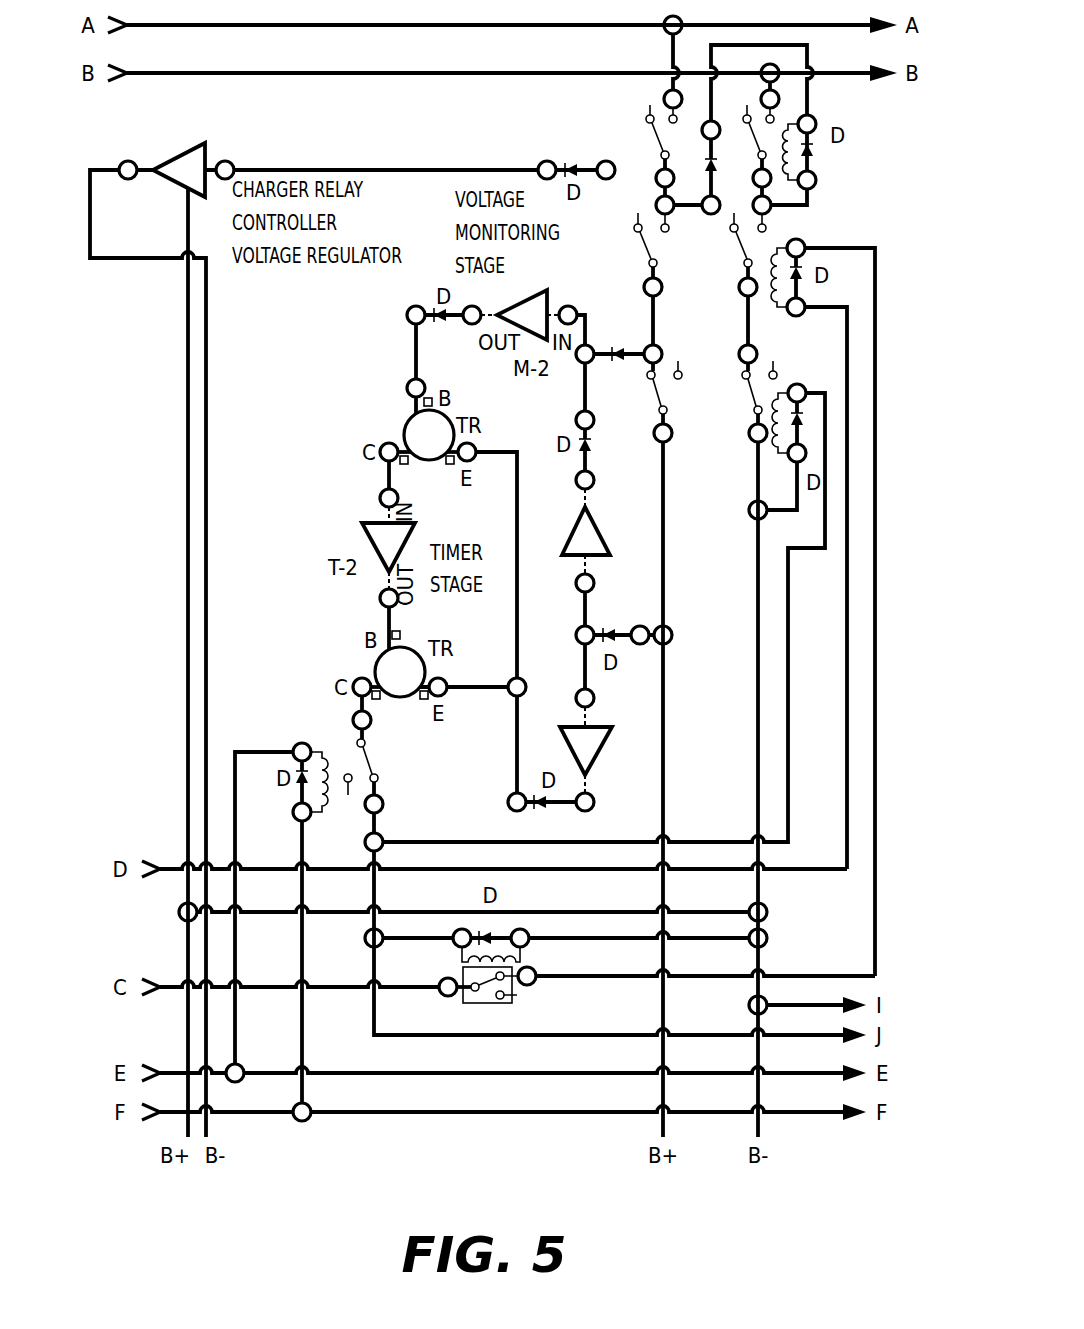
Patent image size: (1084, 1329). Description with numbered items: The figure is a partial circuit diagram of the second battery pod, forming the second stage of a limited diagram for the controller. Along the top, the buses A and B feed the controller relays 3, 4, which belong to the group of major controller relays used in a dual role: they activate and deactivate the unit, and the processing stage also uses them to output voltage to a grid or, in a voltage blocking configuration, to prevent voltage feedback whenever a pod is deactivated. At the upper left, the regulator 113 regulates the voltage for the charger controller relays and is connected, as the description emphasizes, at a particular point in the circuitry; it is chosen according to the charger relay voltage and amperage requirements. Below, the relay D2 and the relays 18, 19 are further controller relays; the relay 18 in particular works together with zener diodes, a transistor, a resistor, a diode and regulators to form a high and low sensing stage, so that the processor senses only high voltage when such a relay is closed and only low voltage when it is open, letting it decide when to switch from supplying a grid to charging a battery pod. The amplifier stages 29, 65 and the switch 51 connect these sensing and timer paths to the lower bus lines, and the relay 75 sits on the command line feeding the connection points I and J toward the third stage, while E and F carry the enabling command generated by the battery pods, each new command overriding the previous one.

The controller relay 3 is at (659, 168).
The controller relay 4 is at (744, 148).
The regulator 113 is at (160, 164).
The relay switch item D2 is at (632, 288).
The controller relay 18 is at (671, 424).
The controller relay 19 is at (744, 350).
The amplifier item 29 is at (590, 530).
The amplifier item 65 is at (599, 752).
The relay switch item 51 is at (379, 790).
The relay item 75 is at (488, 981).